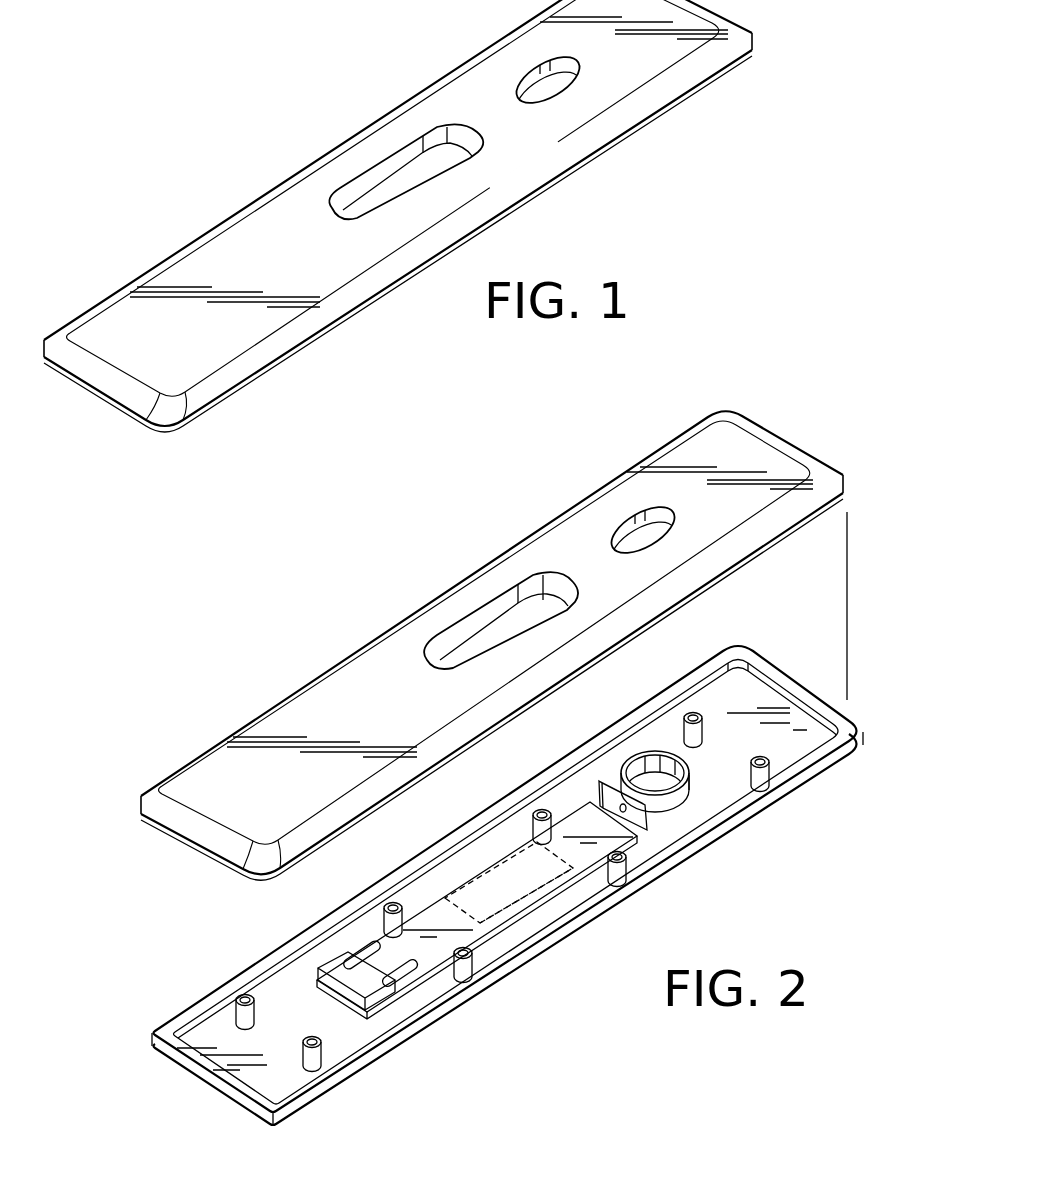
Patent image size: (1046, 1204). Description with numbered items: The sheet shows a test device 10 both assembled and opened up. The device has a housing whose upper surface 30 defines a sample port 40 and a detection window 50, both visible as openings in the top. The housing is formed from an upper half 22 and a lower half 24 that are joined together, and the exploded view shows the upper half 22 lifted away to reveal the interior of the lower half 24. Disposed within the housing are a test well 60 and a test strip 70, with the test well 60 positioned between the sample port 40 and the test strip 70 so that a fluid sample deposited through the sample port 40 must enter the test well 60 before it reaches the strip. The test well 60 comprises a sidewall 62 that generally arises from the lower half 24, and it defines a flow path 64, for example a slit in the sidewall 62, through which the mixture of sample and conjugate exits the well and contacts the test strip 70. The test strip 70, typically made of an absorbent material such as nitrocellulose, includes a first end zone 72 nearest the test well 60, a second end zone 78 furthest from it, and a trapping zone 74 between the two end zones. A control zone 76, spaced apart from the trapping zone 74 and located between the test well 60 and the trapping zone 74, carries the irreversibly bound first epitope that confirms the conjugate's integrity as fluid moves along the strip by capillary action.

In FIG. 1, the test device 10 is at (190, 142).
In FIG. 1, the upper half 22 is at (611, 156).
In FIG. 2, the upper half 22 is at (233, 703).
In FIG. 2, the lower half 24 is at (724, 852).
In FIG. 1, the surface 30 is at (150, 350).
In FIG. 2, the surface 30 is at (245, 797).
In FIG. 1, the sample port 40 is at (526, 70).
In FIG. 2, the sample port 40 is at (620, 516).
In FIG. 1, the detection window 50 is at (407, 139).
In FIG. 2, the detection window 50 is at (500, 584).
In FIG. 2, the test well 60 is at (637, 758).
In FIG. 2, the sidewall 62 is at (690, 790).
In FIG. 2, the flow path 64 is at (647, 828).
In FIG. 2, the test strip 70 is at (500, 870).
In FIG. 2, the first end zone 72 is at (568, 800).
In FIG. 2, the trapping zone 74 is at (445, 901).
In FIG. 2, the control zone 76 is at (530, 838).
In FIG. 2, the second end zone 78 is at (310, 975).